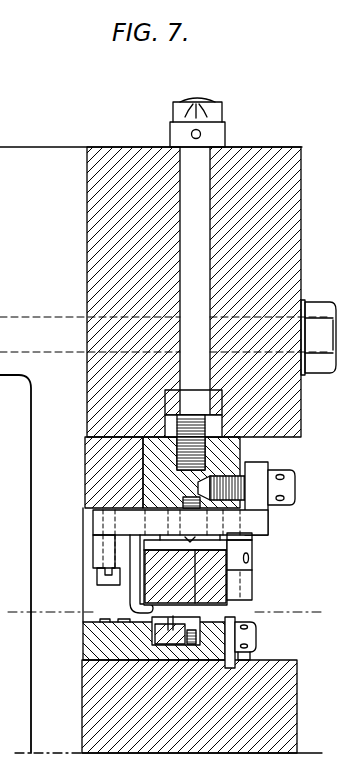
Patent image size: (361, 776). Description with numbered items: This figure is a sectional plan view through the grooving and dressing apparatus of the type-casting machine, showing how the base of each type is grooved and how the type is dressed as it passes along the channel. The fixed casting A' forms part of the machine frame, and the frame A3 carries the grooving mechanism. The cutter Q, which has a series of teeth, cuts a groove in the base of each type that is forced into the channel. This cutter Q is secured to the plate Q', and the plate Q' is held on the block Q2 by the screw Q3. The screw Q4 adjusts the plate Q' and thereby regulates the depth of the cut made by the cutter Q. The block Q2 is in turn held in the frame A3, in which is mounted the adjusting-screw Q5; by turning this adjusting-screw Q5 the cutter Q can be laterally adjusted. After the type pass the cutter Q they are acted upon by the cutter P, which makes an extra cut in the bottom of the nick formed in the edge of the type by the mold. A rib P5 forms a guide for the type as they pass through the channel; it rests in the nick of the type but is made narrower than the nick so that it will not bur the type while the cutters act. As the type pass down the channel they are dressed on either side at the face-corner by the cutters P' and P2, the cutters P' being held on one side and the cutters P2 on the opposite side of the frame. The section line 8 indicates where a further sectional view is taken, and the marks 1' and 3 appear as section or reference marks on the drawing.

The casting A' is at (165, 292).
The frame A3 is at (114, 447).
The adjusting-screw Q5 is at (250, 284).
The block Q2 is at (240, 448).
The screw Q3 is at (207, 492).
The screw Q4 is at (295, 487).
The plate Q' is at (175, 565).
The cutter Q is at (123, 574).
The guide block 1' is at (208, 570).
The cutters P2 is at (239, 596).
The cutter P is at (176, 626).
The rib P5 is at (167, 616).
The cutters P' is at (248, 638).
The center line 3 is at (46, 613).
The center line 8 is at (294, 614).